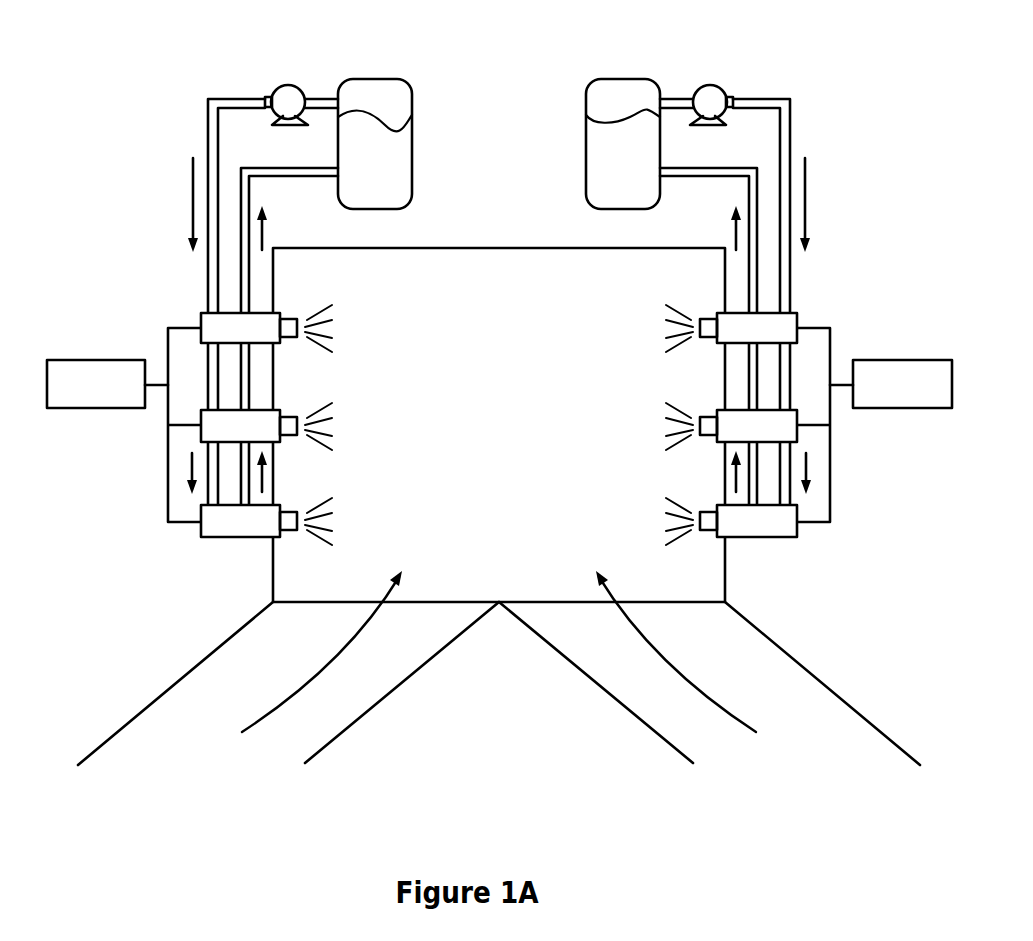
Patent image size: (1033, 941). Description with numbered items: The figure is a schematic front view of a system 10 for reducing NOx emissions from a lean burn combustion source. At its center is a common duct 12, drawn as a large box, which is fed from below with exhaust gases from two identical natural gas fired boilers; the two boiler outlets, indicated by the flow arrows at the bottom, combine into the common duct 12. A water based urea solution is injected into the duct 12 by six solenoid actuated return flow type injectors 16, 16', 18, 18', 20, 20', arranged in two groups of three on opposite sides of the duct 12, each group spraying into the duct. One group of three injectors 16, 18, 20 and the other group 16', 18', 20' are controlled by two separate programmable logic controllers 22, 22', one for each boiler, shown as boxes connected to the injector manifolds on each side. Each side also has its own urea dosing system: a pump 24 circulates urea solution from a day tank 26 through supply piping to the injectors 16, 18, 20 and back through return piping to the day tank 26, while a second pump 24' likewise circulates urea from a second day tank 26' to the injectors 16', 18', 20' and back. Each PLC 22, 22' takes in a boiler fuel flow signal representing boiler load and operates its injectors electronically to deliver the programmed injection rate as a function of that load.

The system for reducing NOx emissions 10 is at (438, 240).
The common duct 12 is at (488, 320).
The injector 16 is at (774, 305).
The injector 16' is at (222, 305).
The injector 18 is at (715, 456).
The injector 18' is at (285, 455).
The injector 20 is at (772, 552).
The injector 20' is at (223, 552).
The programmable logic controller 22 is at (891, 420).
The programmable logic controller 22' is at (107, 419).
The pump 24 is at (748, 77).
The pump 24' is at (247, 77).
The day tank 26 is at (606, 107).
The day tank 26' is at (393, 107).